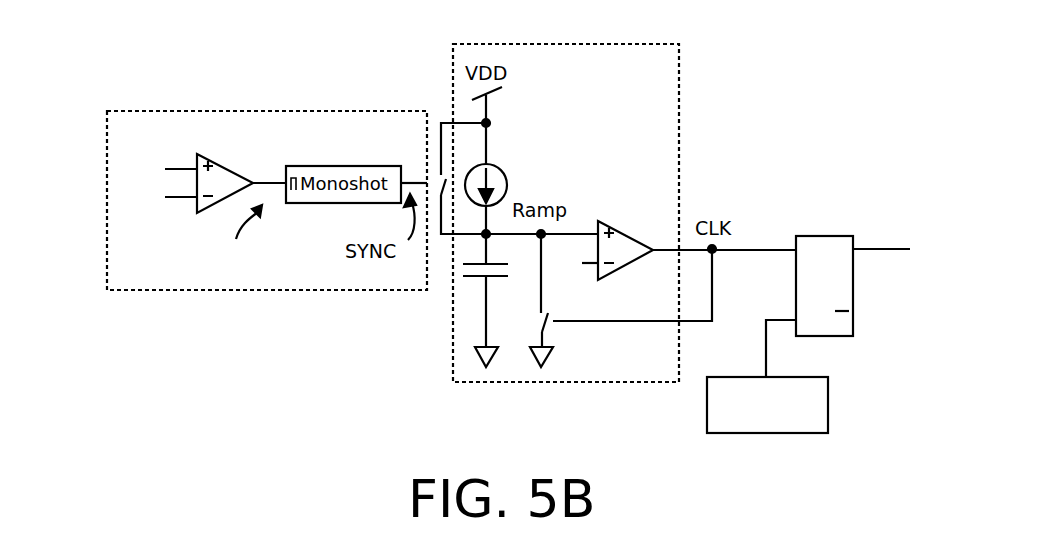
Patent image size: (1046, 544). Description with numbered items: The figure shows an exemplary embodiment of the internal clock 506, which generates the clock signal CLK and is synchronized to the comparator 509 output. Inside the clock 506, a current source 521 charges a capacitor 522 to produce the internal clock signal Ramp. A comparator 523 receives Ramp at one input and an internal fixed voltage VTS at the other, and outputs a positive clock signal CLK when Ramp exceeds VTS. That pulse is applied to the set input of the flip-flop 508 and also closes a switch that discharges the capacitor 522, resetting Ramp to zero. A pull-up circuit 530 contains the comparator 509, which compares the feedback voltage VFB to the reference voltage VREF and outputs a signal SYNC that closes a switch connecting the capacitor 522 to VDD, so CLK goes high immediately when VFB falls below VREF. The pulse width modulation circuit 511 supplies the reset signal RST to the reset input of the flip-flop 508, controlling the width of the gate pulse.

The pull-up circuit 530 is at (107, 111).
The comparator 509 is at (222, 163).
The internal clock 506 is at (679, 76).
The current source 521 is at (506, 178).
The capacitor 522 is at (470, 277).
The comparator 523 is at (630, 232).
The flip-flop 508 is at (830, 236).
The pulse width modulation circuit 511 is at (790, 433).